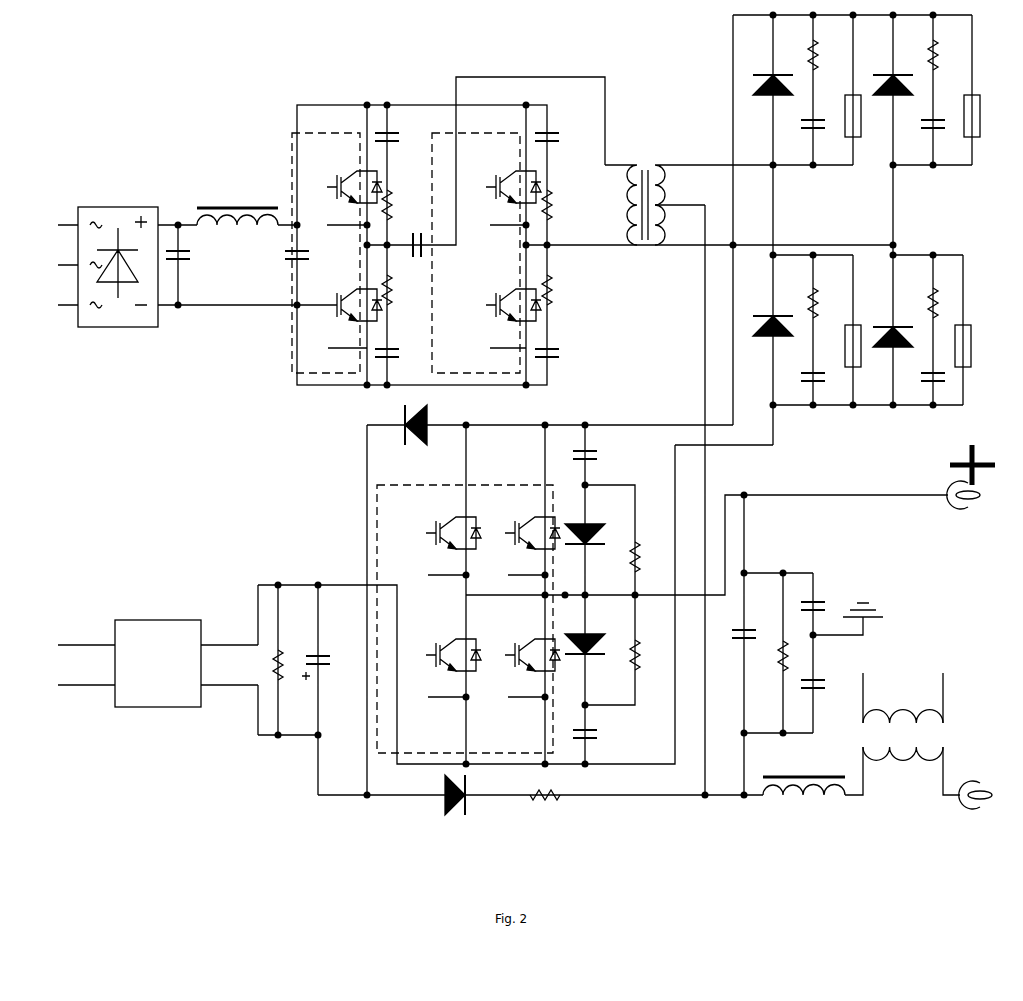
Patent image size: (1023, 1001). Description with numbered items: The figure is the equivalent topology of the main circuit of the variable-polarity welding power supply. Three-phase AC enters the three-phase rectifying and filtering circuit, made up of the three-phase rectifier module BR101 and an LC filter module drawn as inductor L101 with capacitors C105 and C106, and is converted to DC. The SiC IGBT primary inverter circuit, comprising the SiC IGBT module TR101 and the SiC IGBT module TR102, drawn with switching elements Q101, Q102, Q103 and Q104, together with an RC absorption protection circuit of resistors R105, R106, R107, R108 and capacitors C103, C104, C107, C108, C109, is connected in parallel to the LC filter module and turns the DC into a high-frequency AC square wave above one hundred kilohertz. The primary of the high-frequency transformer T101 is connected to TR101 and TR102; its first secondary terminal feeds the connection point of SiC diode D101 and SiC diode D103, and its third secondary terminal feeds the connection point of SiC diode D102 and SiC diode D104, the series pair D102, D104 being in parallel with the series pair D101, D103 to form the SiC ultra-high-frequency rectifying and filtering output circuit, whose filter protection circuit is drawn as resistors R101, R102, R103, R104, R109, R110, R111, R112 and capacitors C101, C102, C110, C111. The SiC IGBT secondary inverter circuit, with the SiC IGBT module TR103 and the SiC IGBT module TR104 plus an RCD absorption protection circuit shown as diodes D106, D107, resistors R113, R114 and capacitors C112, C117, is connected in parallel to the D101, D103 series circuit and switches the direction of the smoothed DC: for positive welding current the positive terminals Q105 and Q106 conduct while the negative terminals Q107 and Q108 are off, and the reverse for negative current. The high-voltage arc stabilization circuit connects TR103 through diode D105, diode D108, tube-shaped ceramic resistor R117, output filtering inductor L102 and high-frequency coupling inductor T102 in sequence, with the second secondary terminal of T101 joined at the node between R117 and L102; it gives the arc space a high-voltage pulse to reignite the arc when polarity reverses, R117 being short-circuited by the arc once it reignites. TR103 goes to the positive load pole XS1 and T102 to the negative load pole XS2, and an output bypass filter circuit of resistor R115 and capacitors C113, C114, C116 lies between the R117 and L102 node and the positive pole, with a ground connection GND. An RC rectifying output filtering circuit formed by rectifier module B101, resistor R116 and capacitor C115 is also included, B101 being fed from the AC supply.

The three-phase rectifier module BR101 is at (118, 259).
The inductor L101 is at (237, 208).
The capacitor C105 is at (194, 256).
The capacitor C106 is at (277, 256).
The SiC IGBT module TR101 is at (341, 192).
The SiC IGBT module TR102 is at (500, 192).
The SiC IGBT module TR103 is at (439, 538).
The SiC IGBT module TR104 is at (519, 538).
The IGBT transistor Q101 is at (342, 191).
The IGBT transistor Q102 is at (500, 191).
The IGBT transistor Q103 is at (341, 323).
The IGBT transistor Q104 is at (500, 323).
The positive terminal Q105 is at (439, 536).
The positive terminal Q106 is at (520, 536).
The negative terminal Q107 is at (439, 673).
The negative terminal Q108 is at (519, 673).
The capacitor C103 is at (403, 137).
The capacitor C104 is at (563, 137).
The capacitor C107 is at (435, 253).
The capacitor C108 is at (403, 353).
The capacitor C109 is at (563, 353).
The resistor R105 is at (404, 205).
The resistor R106 is at (564, 205).
The resistor R107 is at (404, 290).
The resistor R108 is at (564, 290).
The transformer T101 is at (669, 190).
The SiC diode D101 is at (765, 95).
The SiC diode D102 is at (900, 95).
The SiC diode D103 is at (764, 339).
The SiC diode D104 is at (900, 345).
The diode D105 is at (414, 436).
The diode D106 is at (593, 541).
The diode D107 is at (594, 652).
The diode D108 is at (430, 796).
The resistor R101 is at (828, 49).
The resistor R102 is at (948, 52).
The resistor R103 is at (866, 125).
The resistor R104 is at (989, 116).
The resistor R109 is at (828, 300).
The resistor R110 is at (917, 295).
The resistor R111 is at (867, 354).
The resistor R112 is at (980, 346).
The resistor R113 is at (651, 554).
The resistor R114 is at (650, 655).
The resistor R115 is at (768, 656).
The resistor R116 is at (260, 665).
The tube-shaped ceramic resistor R117 is at (534, 803).
The capacitor C101 is at (800, 136).
The capacitor C102 is at (943, 136).
The capacitor C110 is at (825, 385).
The capacitor C111 is at (921, 385).
The capacitor C112 is at (604, 453).
The capacitor C113 is at (824, 616).
The capacitor C114 is at (730, 645).
The capacitor C115 is at (327, 655).
The capacitor C116 is at (825, 673).
The capacitor C117 is at (600, 742).
The output filtering inductor L102 is at (804, 778).
The high-frequency coupling inductor T102 is at (924, 735).
The output socket XS1 is at (958, 484).
The output socket XS2 is at (967, 801).
The ground GND is at (859, 584).
The rectifier module B101 is at (158, 671).